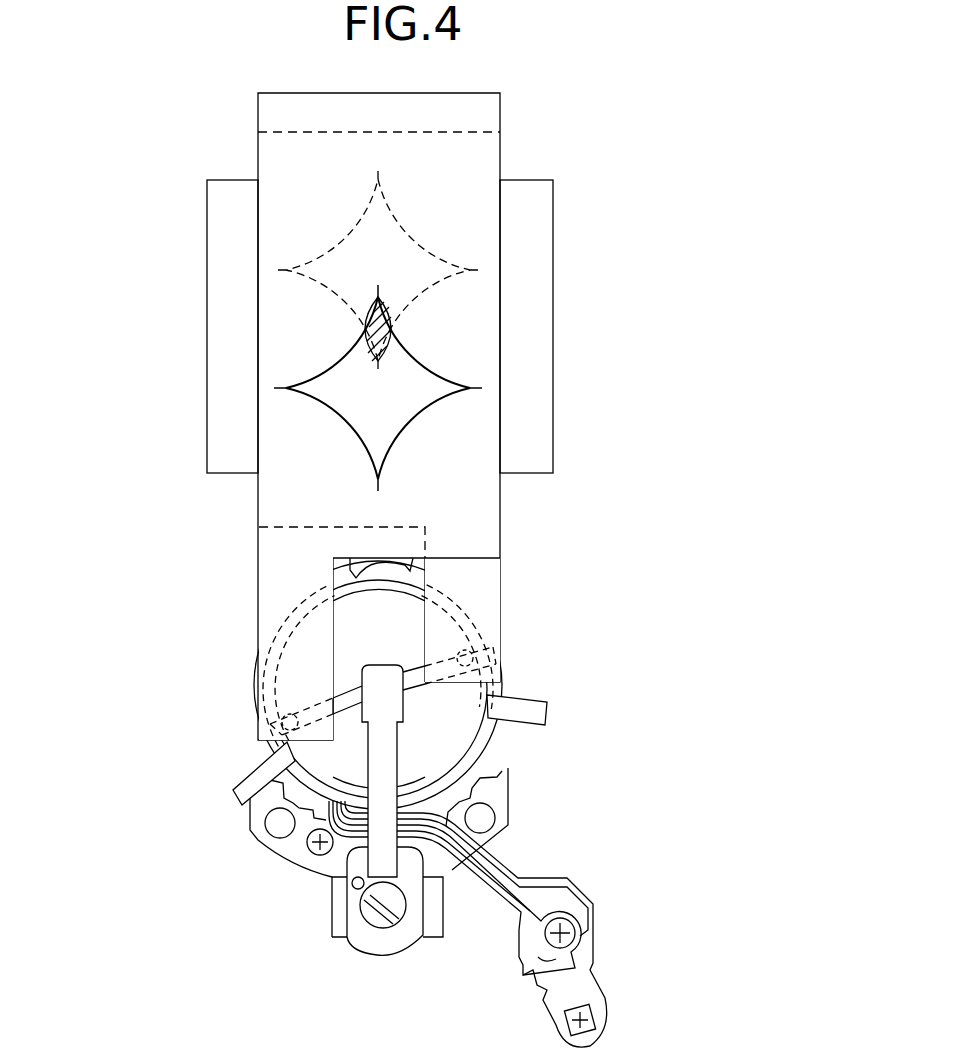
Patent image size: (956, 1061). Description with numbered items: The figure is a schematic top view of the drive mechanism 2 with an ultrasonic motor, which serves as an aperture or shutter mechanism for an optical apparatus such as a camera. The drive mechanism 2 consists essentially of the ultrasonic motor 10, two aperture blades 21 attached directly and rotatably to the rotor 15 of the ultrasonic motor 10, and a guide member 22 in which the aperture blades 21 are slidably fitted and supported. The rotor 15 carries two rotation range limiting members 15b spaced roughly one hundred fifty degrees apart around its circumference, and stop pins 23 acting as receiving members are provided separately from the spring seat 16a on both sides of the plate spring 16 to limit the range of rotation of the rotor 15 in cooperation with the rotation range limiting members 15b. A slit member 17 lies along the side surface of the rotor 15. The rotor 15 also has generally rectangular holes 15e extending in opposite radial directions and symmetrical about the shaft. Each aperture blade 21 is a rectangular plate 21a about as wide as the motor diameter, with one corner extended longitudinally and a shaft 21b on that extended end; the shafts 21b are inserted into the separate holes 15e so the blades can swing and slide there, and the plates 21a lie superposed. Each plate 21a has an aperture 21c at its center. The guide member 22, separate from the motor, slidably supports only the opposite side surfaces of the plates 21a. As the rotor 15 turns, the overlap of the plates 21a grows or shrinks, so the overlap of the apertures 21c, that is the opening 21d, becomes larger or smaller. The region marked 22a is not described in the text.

The drive mechanism with an ultrasonic motor 2 is at (652, 519).
The ultrasonic motor 10 is at (543, 808).
The rotor 15 is at (460, 750).
The rotation range limiting members 15b is at (547, 714).
The holes 15e is at (420, 673).
The plate spring 16 is at (377, 825).
The spring seat 16a is at (360, 952).
The slit member 17 is at (530, 878).
The aperture blades 21 is at (256, 155).
The rectangular plate 21a is at (475, 112).
The shaft 21b is at (490, 660).
The aperture 21c is at (380, 258).
The opening 21d is at (372, 330).
The guide member 22 is at (213, 420).
The magnet gap 22a is at (470, 237).
The stop pins 23 is at (487, 818).